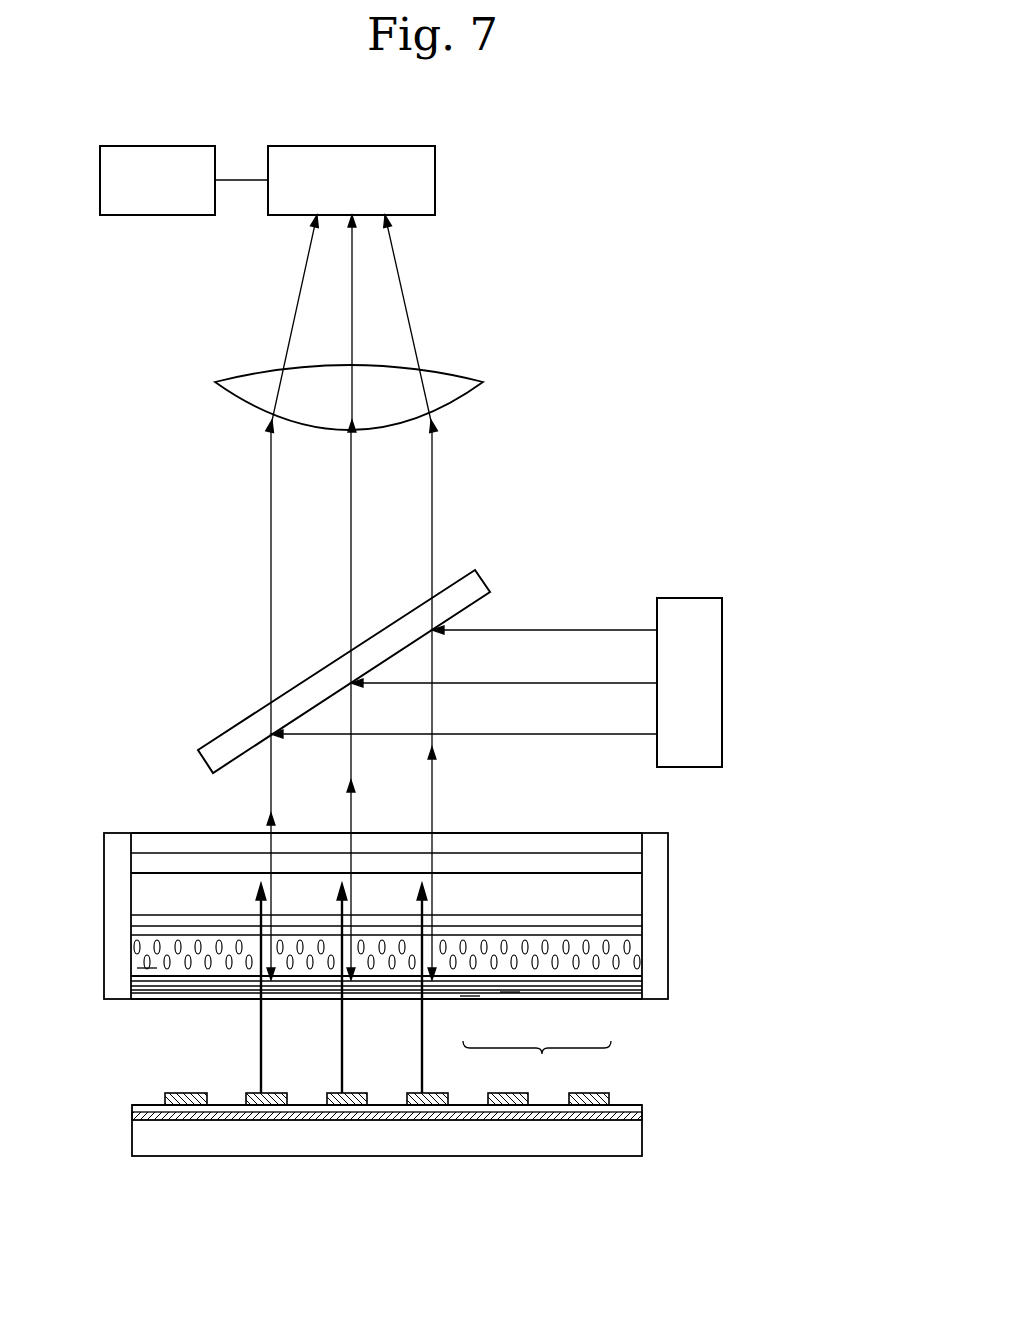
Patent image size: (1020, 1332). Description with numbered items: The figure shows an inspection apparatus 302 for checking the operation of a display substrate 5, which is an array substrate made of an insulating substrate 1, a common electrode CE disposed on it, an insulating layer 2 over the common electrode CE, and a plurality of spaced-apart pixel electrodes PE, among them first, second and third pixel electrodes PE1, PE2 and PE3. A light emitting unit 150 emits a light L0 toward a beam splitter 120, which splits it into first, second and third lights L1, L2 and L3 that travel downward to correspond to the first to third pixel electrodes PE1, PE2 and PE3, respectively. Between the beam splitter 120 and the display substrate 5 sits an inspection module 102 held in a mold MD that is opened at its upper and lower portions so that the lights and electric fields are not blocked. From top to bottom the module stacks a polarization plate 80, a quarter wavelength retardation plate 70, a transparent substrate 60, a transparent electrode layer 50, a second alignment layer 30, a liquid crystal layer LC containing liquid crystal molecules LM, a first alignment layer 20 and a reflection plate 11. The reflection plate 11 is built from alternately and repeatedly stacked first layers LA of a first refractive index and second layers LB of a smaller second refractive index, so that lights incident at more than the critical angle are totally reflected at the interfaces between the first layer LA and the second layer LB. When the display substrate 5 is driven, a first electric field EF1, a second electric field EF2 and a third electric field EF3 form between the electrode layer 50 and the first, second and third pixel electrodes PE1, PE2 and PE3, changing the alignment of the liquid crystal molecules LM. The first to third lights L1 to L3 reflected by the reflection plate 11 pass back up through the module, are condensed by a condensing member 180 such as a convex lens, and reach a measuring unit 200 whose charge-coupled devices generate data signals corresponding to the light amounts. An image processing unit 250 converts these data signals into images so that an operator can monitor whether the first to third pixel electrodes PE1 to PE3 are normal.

The inspection apparatus 302 is at (690, 164).
The image processing unit 250 is at (133, 216).
The measuring unit 200 is at (437, 180).
The condensing member 180 is at (455, 372).
The beam splitter 120 is at (492, 578).
The light emitting unit 150 is at (688, 598).
The light L0 is at (597, 628).
The first light L1 is at (273, 800).
The second light L2 is at (353, 800).
The third light L3 is at (434, 800).
The mold MD is at (121, 845).
The inspection module 102 is at (741, 833).
The polarization plate 80 is at (637, 843).
The ¼ wavelength retardation plate 70 is at (637, 863).
The substrate 60 is at (637, 893).
The electrode layer 50 is at (637, 918).
The second alignment layer 30 is at (637, 929).
The liquid crystal layer LC is at (637, 947).
The first alignment layer 20 is at (637, 978).
The reflection plate 11 is at (542, 1054).
The second layer LB is at (475, 996).
The first layer LA is at (515, 992).
The liquid crystal molecules LM is at (147, 970).
The first electric field EF1 is at (259, 1037).
The second electric field EF2 is at (340, 1037).
The third electric field EF3 is at (420, 1037).
The first pixel electrode PE1 is at (265, 1106).
The second pixel electrode PE2 is at (346, 1106).
The third pixel electrode PE3 is at (426, 1106).
The pixel electrodes PE is at (445, 1198).
The common electrode CE is at (510, 1121).
The insulating layer 2 is at (643, 1107).
The insulating substrate 1 is at (643, 1137).
The display substrate 5 is at (699, 1100).